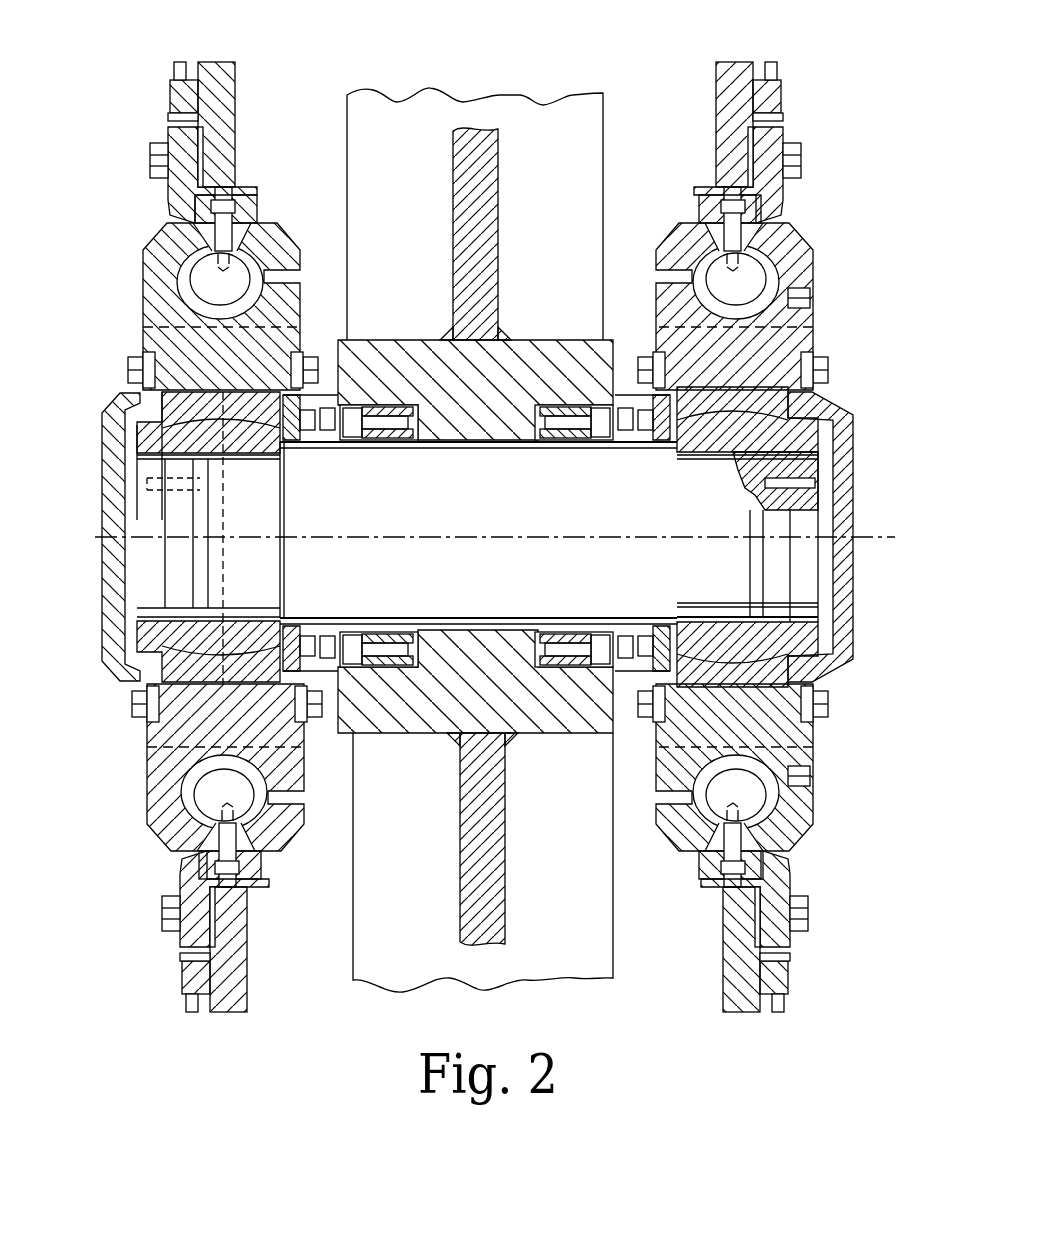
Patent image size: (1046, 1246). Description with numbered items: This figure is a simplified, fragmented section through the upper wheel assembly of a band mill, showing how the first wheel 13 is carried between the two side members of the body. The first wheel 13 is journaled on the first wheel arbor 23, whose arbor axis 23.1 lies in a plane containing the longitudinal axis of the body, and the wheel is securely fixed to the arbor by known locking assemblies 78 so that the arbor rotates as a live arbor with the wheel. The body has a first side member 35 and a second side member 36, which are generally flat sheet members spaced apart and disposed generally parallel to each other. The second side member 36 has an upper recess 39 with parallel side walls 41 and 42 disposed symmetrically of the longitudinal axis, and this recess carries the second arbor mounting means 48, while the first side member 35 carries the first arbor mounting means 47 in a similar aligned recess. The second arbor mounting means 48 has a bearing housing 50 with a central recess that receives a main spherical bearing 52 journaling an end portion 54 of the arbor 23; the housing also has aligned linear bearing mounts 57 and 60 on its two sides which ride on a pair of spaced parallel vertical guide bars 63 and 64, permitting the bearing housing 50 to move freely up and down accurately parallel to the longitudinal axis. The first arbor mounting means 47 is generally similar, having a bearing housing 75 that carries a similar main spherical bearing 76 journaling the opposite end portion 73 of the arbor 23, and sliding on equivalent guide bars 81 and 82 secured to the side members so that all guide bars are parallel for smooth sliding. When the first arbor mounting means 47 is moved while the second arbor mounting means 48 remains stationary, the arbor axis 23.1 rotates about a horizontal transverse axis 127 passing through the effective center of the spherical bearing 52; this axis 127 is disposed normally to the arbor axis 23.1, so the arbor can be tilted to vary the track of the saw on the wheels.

The first wheel 13 is at (606, 136).
The first wheel arbor 23 is at (303, 587).
The arbor axis 23.1 is at (446, 540).
The first side member 35 is at (720, 76).
The second side member 36 is at (233, 117).
The upper recess 39 is at (806, 848).
The side wall 41 is at (724, 869).
The side wall 42 is at (718, 212).
The first arbor mounting means 47 is at (125, 695).
The second arbor mounting means 48 is at (824, 731).
The bearing housing 50 is at (797, 340).
The main spherical bearing 52 is at (262, 455).
The end portion 54 is at (692, 568).
The linear bearing mount 57 is at (800, 264).
The linear bearing mount 60 is at (806, 742).
The guide bar 63 is at (776, 233).
The guide bar 64 is at (758, 803).
The end portion 73 is at (215, 574).
The bearing housing 75 is at (158, 768).
The main spherical bearing 76 is at (178, 412).
The locking assemblies 78 is at (386, 449).
The guide bar 81 is at (238, 268).
The guide bar 82 is at (218, 800).
The horizontal transverse axis 127 is at (223, 560).